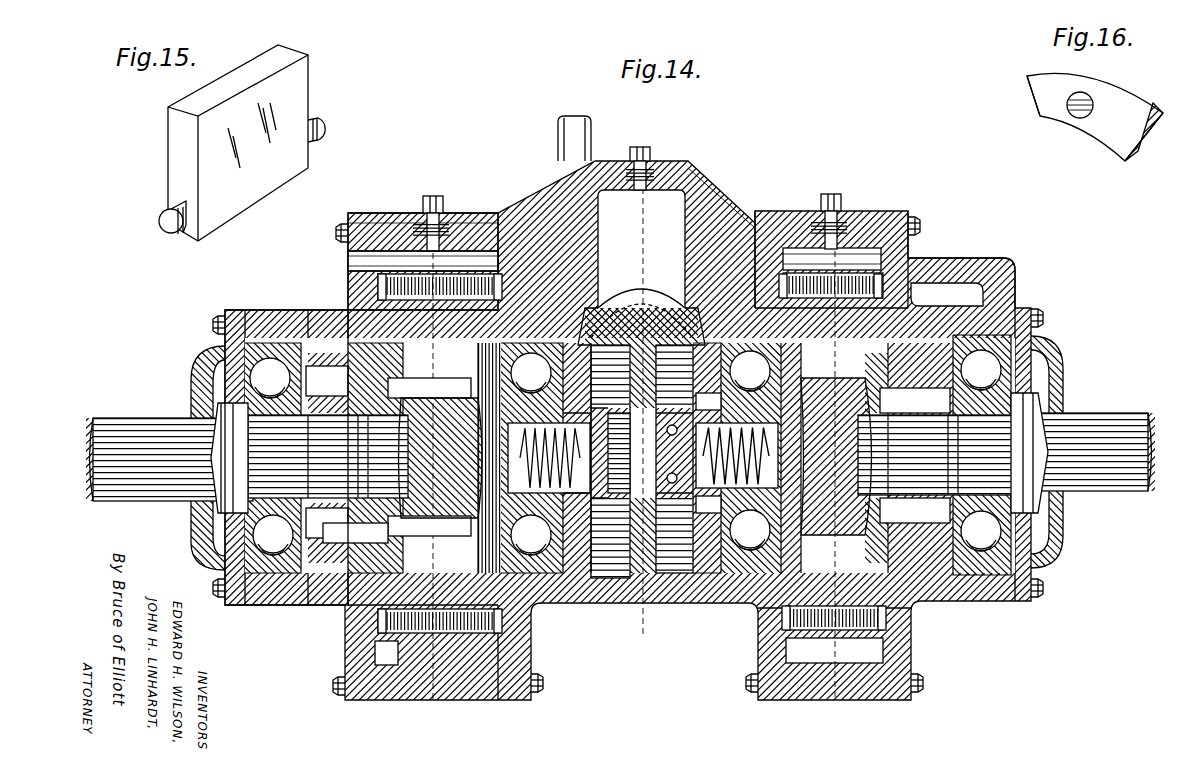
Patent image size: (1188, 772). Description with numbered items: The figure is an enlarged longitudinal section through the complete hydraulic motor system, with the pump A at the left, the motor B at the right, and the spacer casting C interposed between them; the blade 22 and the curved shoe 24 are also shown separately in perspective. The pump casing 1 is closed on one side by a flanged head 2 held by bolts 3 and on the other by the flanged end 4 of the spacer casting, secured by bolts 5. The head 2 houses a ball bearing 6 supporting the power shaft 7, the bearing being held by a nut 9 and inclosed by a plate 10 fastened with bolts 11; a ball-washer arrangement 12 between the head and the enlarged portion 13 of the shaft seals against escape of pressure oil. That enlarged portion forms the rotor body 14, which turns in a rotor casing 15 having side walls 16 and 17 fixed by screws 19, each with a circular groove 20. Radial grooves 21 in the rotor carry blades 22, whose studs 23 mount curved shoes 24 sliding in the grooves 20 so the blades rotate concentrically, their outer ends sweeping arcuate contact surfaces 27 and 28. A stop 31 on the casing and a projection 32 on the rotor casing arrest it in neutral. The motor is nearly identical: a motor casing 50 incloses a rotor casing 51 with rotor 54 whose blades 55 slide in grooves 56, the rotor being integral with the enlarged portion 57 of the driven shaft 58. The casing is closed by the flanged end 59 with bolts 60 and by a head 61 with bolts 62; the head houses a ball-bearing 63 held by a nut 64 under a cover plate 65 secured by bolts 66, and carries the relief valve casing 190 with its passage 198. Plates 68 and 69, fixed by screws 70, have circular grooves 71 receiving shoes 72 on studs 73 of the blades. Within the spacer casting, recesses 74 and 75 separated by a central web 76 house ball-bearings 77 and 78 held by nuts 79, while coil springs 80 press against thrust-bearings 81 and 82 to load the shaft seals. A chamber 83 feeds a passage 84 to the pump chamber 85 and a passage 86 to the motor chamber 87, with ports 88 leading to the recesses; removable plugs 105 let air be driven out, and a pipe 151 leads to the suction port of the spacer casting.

In FIG. 14, the casing of the pump 1 is at (383, 205).
In FIG. 14, the flanged head 2 is at (268, 302).
In FIG. 14, the bolts 3 is at (325, 228).
In FIG. 14, the flanged end of the spacer casting 4 is at (522, 640).
In FIG. 14, the bolts 5 is at (538, 690).
In FIG. 14, the ball bearing 6 is at (265, 548).
In FIG. 14, the shaft 7 is at (112, 412).
In FIG. 14, the nut 9 is at (215, 400).
In FIG. 14, the plate 10 is at (185, 505).
In FIG. 14, the bolts 11 is at (205, 305).
In FIG. 14, the ball-washer arrangement 12 is at (345, 495).
In FIG. 14, the enlarged circular portion of the power shaft 13 is at (370, 515).
In FIG. 14, the body of a rotor 14 is at (305, 428).
In FIG. 14, the rotor casing 15 is at (455, 243).
In FIG. 14, the side wall of the rotor casing 16 is at (360, 580).
In FIG. 14, the inner wall of the rotor casing 17 is at (490, 298).
In FIG. 14, the screws 19 is at (470, 262).
In FIG. 14, the circular groove 20 is at (305, 380).
In FIG. 14, the radial grooves 21 is at (395, 432).
In FIG. 14, the blade 22 is at (440, 286).
In FIG. 14, the studs 23 is at (425, 392).
In FIG. 16, the curved shoe 24 is at (1140, 100).
In FIG. 14, the curved shoe 24 is at (330, 302).
In FIG. 14, the arcuate contact surface 27 is at (405, 208).
In FIG. 14, the arcuate contact surface 28 is at (448, 692).
In FIG. 14, the stop 31 is at (415, 692).
In FIG. 14, the projection 32 is at (515, 617).
In FIG. 14, the motor casing 50 is at (797, 692).
In FIG. 14, the rotor casing 51 is at (840, 262).
In FIG. 14, the rotor 54 is at (882, 392).
In FIG. 15, the radial blades 55 is at (300, 76).
In FIG. 14, the radial blades 55 is at (945, 286).
In FIG. 14, the grooves 56 is at (805, 625).
In FIG. 14, the enlarged portion of a shaft 57 is at (880, 446).
In FIG. 14, the shaft 58 is at (1118, 490).
In FIG. 14, the flanged end of the spacer casting 59 is at (752, 648).
In FIG. 14, the bolts 60 is at (738, 683).
In FIG. 14, the head 61 is at (1012, 298).
In FIG. 14, the bolts 62 is at (918, 216).
In FIG. 14, the ball-bearing 63 is at (1056, 360).
In FIG. 14, the nut 64 is at (1030, 395).
In FIG. 14, the cover plate 65 is at (1050, 346).
In FIG. 14, the bolts 66 is at (1038, 313).
In FIG. 14, the plate 68 is at (790, 240).
In FIG. 14, the plate 69 is at (857, 268).
In FIG. 14, the screws 70 is at (907, 252).
In FIG. 14, the circular groove 71 is at (825, 400).
In FIG. 14, the shoes 72 is at (950, 376).
In FIG. 15, the studs 73 is at (160, 220).
In FIG. 14, the studs 73 is at (716, 376).
In FIG. 14, the recess 74 is at (594, 594).
In FIG. 14, the recess 75 is at (670, 594).
In FIG. 14, the central web 76 is at (622, 594).
In FIG. 14, the ball-bearing 77 is at (566, 392).
In FIG. 14, the ball-bearing 78 is at (712, 382).
In FIG. 14, the nuts 79 is at (566, 508).
In FIG. 14, the coil spring 80 is at (612, 405).
In FIG. 14, the ball-bearing thrust-bearing 81 is at (605, 490).
In FIG. 14, the ball-bearing thrust-bearing 82 is at (658, 508).
In FIG. 14, the chamber 83 is at (668, 178).
In FIG. 14, the passage 84 is at (592, 210).
In FIG. 14, the chamber 85 is at (478, 230).
In FIG. 14, the passage 86 is at (722, 198).
In FIG. 14, the chamber 87 is at (845, 240).
In FIG. 14, the ports 88 is at (628, 292).
In FIG. 14, the removable plugs 105 is at (432, 188).
In FIG. 14, the pipe 151 is at (566, 108).
In FIG. 14, the casing of a relief valve 190 is at (1010, 272).
In FIG. 14, the passage 198 is at (945, 275).
In FIG. 14, the pump A is at (458, 178).
In FIG. 14, the motor B is at (1008, 242).
In FIG. 14, the spacer casting C is at (722, 162).